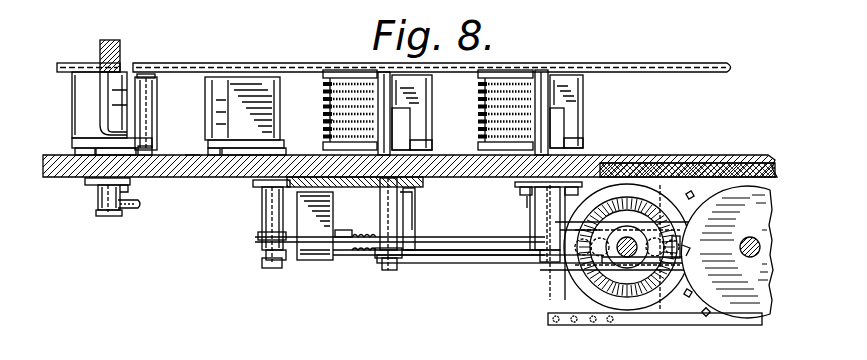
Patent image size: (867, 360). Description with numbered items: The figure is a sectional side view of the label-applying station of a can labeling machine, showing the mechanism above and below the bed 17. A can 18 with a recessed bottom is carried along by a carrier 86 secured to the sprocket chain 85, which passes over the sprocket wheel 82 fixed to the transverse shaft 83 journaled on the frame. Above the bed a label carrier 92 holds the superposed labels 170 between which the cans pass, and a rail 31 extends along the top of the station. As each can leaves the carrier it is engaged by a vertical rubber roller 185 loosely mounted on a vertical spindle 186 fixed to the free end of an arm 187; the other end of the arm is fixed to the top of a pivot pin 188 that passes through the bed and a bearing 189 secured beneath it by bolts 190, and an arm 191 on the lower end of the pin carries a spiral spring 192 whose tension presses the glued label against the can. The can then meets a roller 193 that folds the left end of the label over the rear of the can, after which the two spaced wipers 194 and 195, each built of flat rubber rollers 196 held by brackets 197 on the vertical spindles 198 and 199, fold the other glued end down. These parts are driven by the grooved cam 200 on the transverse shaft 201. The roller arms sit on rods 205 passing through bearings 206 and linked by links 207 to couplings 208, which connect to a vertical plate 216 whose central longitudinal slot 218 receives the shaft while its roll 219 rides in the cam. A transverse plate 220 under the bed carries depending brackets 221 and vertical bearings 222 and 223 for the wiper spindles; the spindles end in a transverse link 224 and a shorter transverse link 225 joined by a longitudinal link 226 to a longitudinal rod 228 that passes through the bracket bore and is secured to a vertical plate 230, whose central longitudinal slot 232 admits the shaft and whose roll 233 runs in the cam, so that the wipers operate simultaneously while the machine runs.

The bed 17 is at (752, 160).
The can 18 is at (81, 104).
The supporting rail 31 is at (69, 63).
The sprocket wheel 82 is at (722, 300).
The transverse shaft 83 is at (748, 238).
The sprocket chain 85 is at (585, 323).
The carrier 86 is at (75, 149).
The label carrier 92 is at (125, 75).
The label 170 is at (206, 88).
The roller 185 is at (157, 105).
The vertical spindle 186 is at (152, 118).
The arm 187 is at (160, 156).
The pivot pin 188 is at (93, 201).
The bearing 189 is at (97, 186).
The bolt 190 is at (126, 187).
The arm 191 is at (124, 217).
The spiral spring 192 is at (130, 208).
The roller 193 is at (191, 176).
The wiper 194 is at (332, 71).
The wiper 195 is at (523, 70).
The flat roller 196 is at (325, 124).
The bracket 197 is at (550, 78).
The vertical spindle 198 is at (410, 200).
The vertical spindle 199 is at (531, 204).
The grooved cam 200 is at (641, 306).
The transverse shaft 201 is at (637, 160).
The rod 205 is at (262, 197).
The bearing 206 is at (262, 210).
The link 207 is at (260, 234).
The coupling 208 is at (263, 252).
The vertical plate 216 is at (527, 226).
The central longitudinal slot 218 is at (580, 273).
The roll 219 is at (683, 242).
The transverse plate 220 is at (341, 186).
The bracket 221 is at (315, 257).
The vertical bearing 222 is at (411, 215).
The vertical bearing 223 is at (542, 230).
The transverse link 224 is at (379, 263).
The shorter transverse link 225 is at (535, 265).
The longitudinal link 226 is at (441, 259).
The longitudinal rod 228 is at (433, 256).
The vertical plate 230 is at (669, 202).
The central longitudinal slot 232 is at (667, 161).
The roll 233 is at (591, 286).